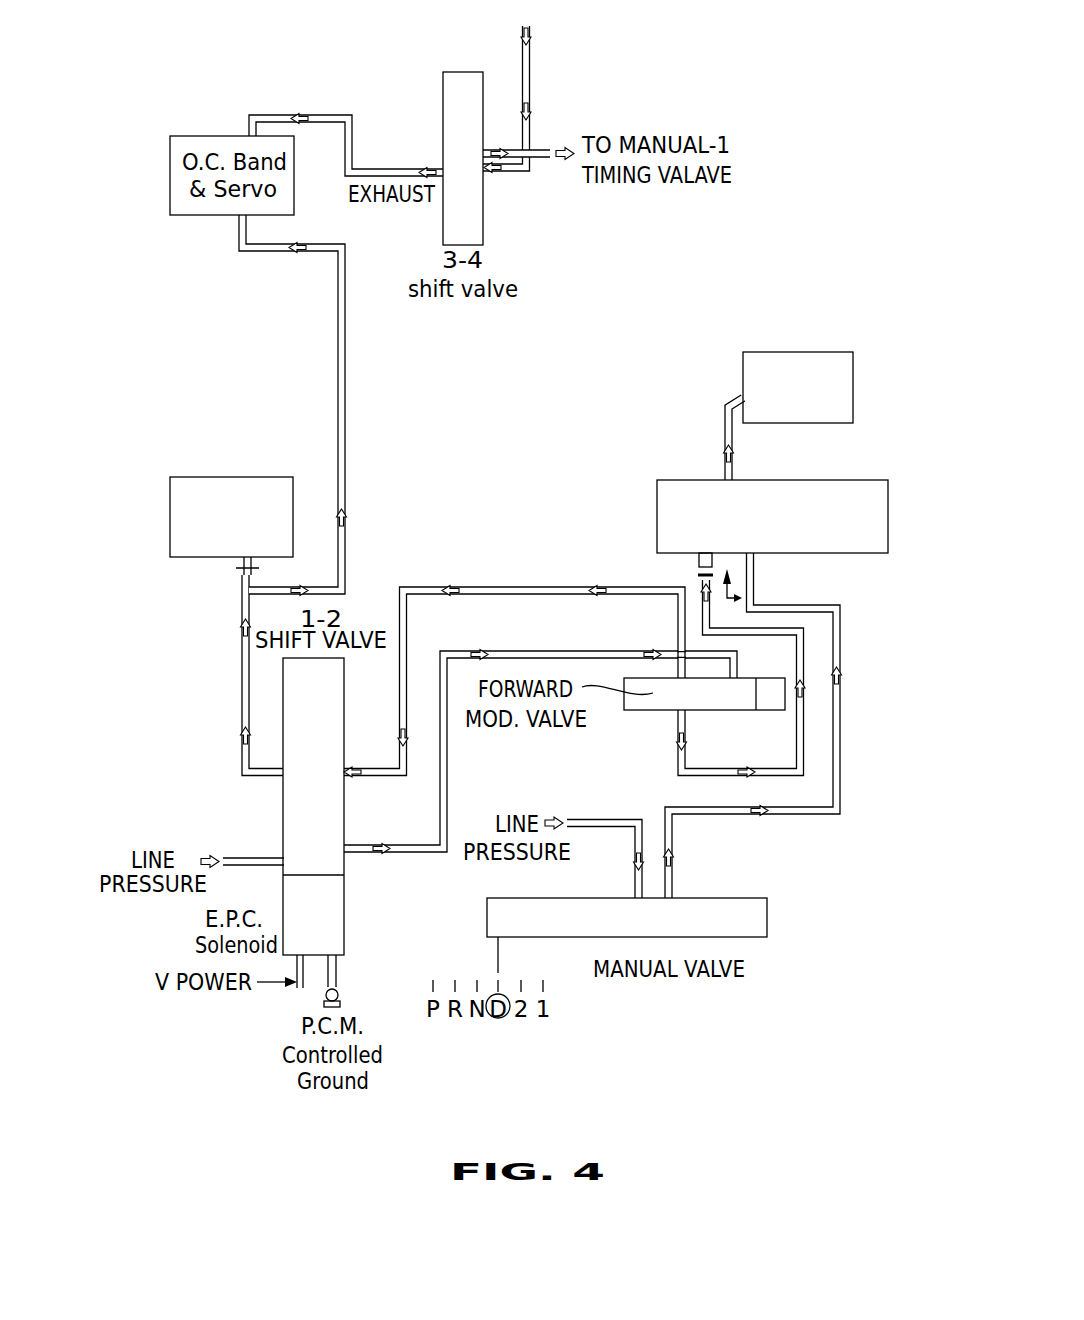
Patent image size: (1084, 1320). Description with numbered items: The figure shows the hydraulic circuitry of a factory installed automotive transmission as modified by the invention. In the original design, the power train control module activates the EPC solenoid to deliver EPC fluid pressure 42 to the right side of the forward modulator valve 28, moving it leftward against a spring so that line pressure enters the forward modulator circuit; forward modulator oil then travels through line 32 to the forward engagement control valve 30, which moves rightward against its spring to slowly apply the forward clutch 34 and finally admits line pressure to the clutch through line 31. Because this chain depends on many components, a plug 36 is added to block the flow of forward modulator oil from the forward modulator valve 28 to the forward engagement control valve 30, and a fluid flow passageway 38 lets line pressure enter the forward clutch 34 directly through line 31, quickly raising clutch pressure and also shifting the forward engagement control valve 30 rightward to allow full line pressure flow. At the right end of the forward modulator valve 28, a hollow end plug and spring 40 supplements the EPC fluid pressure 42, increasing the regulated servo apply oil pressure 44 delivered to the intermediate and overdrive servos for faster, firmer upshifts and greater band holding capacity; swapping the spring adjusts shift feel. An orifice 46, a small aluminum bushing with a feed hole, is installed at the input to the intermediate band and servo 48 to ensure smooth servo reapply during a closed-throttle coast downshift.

The forward modulator valve 28 is at (647, 712).
The forward engagement control valve 30 is at (853, 480).
The line 31 is at (723, 460).
The line 32 is at (770, 777).
The forward clutch 34 is at (828, 352).
The plug 36 is at (680, 570).
The fluid flow passageway 38 is at (730, 585).
The end plug and spring 40 is at (772, 690).
The EPC fluid pressure 42 is at (600, 650).
The servo apply oil pressure to intermediate and overdrive servos 44 is at (418, 587).
The orifice 46 is at (222, 578).
The intermediate band and servo 48 is at (263, 466).